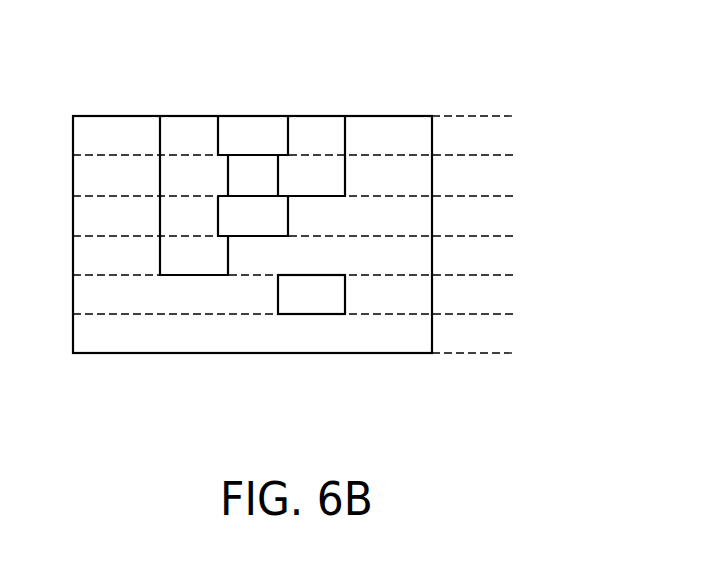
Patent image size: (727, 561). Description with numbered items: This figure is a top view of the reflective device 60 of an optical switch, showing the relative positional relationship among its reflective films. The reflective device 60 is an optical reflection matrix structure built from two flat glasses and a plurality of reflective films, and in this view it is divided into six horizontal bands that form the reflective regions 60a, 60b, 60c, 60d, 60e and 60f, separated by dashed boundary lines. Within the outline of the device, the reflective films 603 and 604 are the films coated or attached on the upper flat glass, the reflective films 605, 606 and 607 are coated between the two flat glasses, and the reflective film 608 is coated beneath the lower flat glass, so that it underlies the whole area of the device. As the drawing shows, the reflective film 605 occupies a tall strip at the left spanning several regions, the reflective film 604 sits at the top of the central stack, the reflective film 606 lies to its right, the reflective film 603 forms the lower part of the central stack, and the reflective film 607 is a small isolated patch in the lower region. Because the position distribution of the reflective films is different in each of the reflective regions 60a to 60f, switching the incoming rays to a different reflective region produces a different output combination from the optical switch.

The reflective device 60 is at (118, 62).
The reflective region 60a is at (480, 336).
The reflective region 60b is at (300, 296).
The reflective region 60c is at (300, 258).
The reflective region 60d is at (301, 218).
The reflective region 60e is at (300, 178).
The reflective region 60f is at (299, 135).
The reflective film 603 is at (250, 226).
The reflective film 604 is at (250, 125).
The reflective film 605 is at (188, 125).
The reflective film 606 is at (318, 125).
The reflective film 607 is at (312, 305).
The reflective film 608 is at (397, 340).